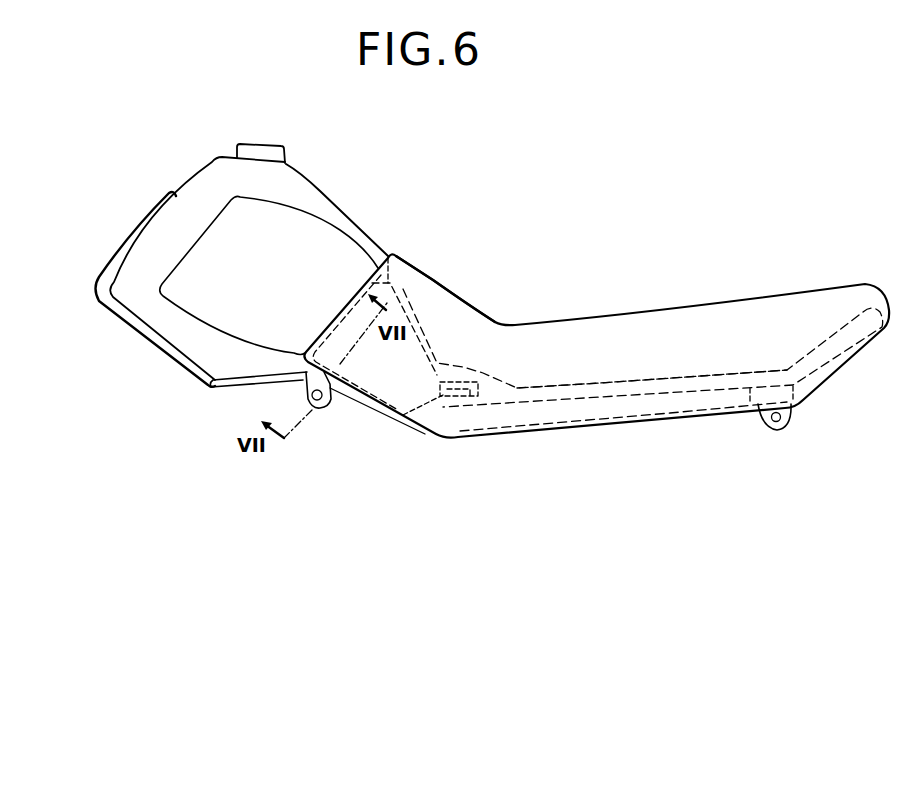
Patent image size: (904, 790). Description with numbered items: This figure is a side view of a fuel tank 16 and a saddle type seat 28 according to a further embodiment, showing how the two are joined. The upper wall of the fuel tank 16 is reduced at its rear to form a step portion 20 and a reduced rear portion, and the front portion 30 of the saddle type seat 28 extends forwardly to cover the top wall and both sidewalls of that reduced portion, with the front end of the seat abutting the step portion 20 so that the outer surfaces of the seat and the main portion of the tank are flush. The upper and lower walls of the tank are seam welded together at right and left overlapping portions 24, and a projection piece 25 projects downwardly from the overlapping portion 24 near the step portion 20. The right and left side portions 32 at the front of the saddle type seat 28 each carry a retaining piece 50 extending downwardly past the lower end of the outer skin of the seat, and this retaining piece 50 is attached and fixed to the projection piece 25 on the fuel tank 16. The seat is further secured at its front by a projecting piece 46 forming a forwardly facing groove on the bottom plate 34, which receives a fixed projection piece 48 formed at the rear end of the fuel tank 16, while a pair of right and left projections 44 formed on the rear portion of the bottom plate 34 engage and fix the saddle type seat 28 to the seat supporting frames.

The fuel tank 16 is at (322, 198).
The step portion 20 is at (396, 237).
The overlapping portion 24 is at (213, 388).
The projection piece 25 is at (302, 389).
The saddle type seat 28 is at (691, 310).
The front portion 30 is at (428, 257).
The side portion 32 is at (352, 332).
The bottom plate 34 is at (584, 385).
The projection 44 is at (767, 428).
The projecting piece 46 is at (462, 410).
The fixed projection piece 48 is at (437, 405).
The retaining piece 50 is at (323, 408).